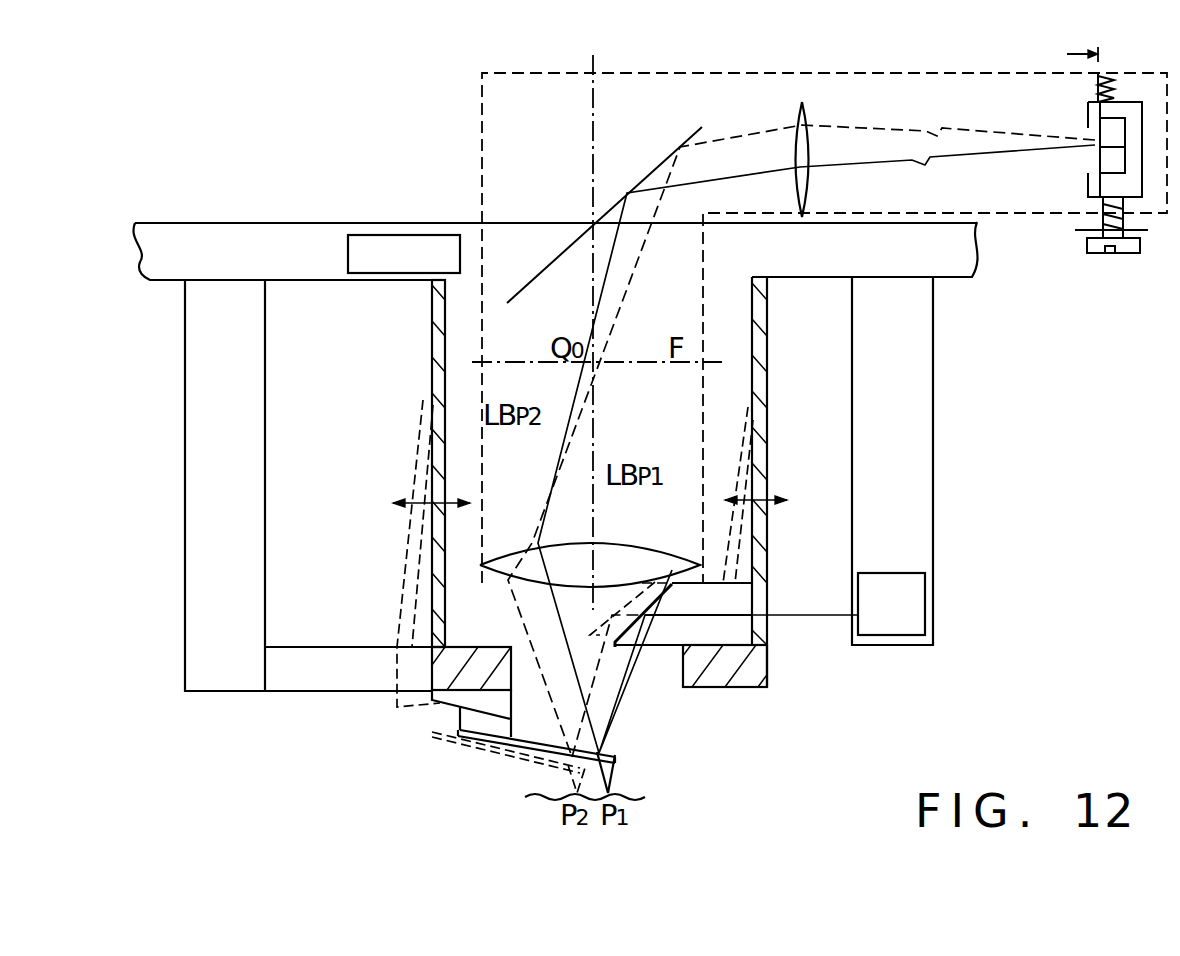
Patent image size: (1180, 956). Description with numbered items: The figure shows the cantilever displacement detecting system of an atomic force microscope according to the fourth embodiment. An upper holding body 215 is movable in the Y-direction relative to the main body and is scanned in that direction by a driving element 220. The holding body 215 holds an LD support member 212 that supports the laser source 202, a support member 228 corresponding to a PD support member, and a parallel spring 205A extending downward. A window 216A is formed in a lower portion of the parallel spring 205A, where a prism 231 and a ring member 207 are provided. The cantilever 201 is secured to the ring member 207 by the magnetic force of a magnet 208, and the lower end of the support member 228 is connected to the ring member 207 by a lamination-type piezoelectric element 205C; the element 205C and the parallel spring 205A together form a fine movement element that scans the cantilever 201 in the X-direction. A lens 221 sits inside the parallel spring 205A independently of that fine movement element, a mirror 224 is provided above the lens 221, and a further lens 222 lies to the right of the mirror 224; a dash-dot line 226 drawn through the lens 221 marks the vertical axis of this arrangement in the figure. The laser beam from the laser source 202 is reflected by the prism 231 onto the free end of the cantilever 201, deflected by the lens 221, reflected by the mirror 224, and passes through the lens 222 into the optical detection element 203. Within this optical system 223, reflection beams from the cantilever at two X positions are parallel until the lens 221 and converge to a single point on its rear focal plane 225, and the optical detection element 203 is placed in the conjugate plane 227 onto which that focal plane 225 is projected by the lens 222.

The cantilever 201 is at (615, 755).
The laser source 202 is at (907, 612).
The optical detection element 203 is at (1105, 193).
The parallel spring 205A is at (432, 360).
The lamination-type piezoelectric element 205C is at (331, 680).
The ring member 207 is at (433, 680).
The magnet 208 is at (440, 702).
The LD support member 212 is at (925, 475).
The upper holding body 215 is at (310, 240).
The window 216A is at (807, 580).
The driving element 220 is at (408, 245).
The lens 221 is at (641, 523).
The lens 222 is at (800, 148).
The optical system 223 is at (517, 133).
The mirror 224 is at (517, 296).
The rear focal plane 225 is at (627, 365).
The optical axis 226 is at (593, 160).
The conjugate plane 227 is at (1056, 55).
The support member 228 is at (192, 552).
The prism 231 is at (652, 648).